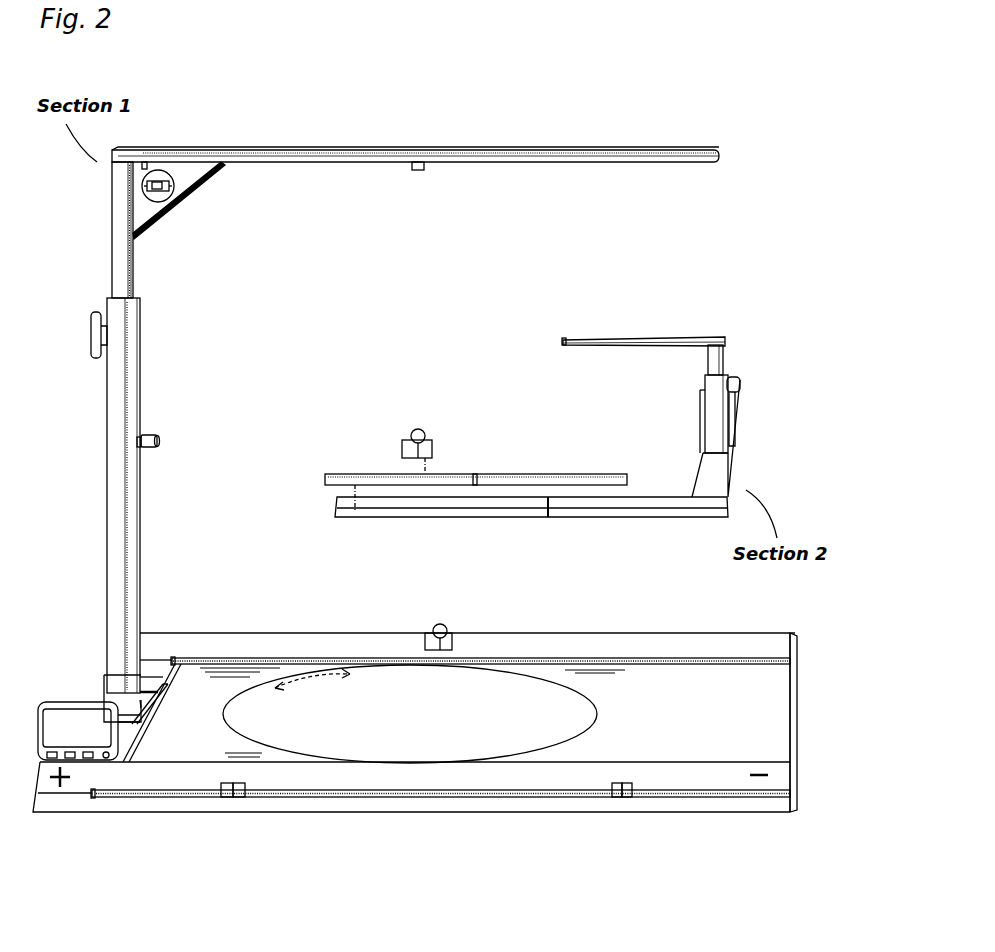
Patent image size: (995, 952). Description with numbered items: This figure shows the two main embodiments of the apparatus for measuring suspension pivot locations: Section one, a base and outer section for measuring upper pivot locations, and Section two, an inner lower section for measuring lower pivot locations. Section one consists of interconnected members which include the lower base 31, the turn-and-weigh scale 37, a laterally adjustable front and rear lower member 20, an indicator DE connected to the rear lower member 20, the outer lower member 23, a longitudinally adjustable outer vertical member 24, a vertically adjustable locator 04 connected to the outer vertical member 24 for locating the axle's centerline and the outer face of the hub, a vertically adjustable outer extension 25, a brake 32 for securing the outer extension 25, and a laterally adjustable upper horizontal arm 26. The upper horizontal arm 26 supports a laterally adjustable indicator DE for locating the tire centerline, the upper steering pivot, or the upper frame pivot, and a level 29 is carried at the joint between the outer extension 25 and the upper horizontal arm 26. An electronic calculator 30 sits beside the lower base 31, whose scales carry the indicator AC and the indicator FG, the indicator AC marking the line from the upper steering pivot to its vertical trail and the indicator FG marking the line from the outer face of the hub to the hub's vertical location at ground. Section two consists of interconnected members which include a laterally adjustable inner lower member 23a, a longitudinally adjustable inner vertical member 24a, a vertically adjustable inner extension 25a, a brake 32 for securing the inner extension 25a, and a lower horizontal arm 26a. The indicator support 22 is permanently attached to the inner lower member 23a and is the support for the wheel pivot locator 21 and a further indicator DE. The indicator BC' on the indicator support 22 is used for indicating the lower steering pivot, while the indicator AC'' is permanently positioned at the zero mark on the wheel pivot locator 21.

The lower member 20 is at (224, 644).
The wheel pivot locator 21 is at (327, 486).
The indicator support 22 is at (650, 517).
The outer lower member 23 is at (127, 728).
The inner lower member 23a is at (694, 481).
The outer vertical member 24 is at (108, 646).
The inner vertical member 24a is at (704, 448).
The outer extension 25 is at (112, 214).
The inner extension 25a is at (725, 356).
The upper horizontal arm 26 is at (170, 150).
The lower horizontal arm 26a is at (704, 340).
The level 29 is at (172, 190).
The electronic calculator 30 is at (68, 702).
The lower base 31 is at (786, 714).
The brake 32 is at (91, 340).
The locator 04 is at (150, 436).
The turn-and-weigh scale 37 is at (313, 675).
The indicator for line D to E DE is at (412, 168).
The indicator for line A to C AC is at (613, 811).
The indicator for line A to C" AC'' is at (491, 457).
The indicator for line B to C' BC' is at (572, 520).
The indicator for line F to G FG is at (232, 798).